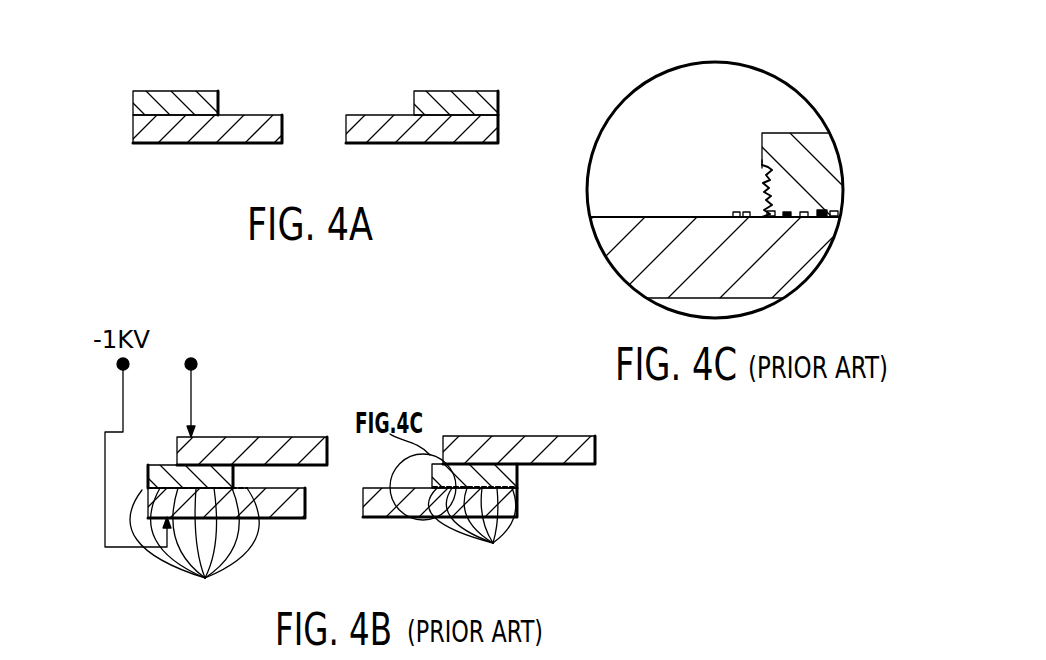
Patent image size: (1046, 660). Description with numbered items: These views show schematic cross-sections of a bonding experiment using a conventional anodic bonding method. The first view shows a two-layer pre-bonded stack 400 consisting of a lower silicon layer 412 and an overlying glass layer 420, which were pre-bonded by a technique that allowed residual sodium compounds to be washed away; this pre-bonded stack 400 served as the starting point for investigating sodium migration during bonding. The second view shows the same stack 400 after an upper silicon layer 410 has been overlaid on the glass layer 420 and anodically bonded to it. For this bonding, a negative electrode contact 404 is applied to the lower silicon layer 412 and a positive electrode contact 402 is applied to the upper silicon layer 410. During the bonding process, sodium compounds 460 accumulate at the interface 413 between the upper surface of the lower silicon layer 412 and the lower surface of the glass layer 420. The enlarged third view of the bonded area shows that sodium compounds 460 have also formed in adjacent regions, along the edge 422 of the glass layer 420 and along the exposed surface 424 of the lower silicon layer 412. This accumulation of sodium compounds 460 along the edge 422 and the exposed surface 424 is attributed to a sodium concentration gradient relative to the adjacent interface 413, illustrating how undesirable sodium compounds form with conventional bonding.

In FIG. 4A, the pre-bonded stack 400 is at (314, 78).
In FIG. 4B, the positive electrode contact 402 is at (194, 428).
In FIG. 4B, the negative electrode contact 404 is at (163, 522).
In FIG. 4B, the upper silicon layer 410 is at (450, 437).
In FIG. 4A, the lower silicon layer 412 is at (347, 143).
In FIG. 4B, the lower silicon layer 412 is at (363, 517).
In FIG. 4C, the lower silicon layer 412 is at (783, 268).
In FIG. 4B, the interface 413 is at (178, 474).
In FIG. 4C, the interface 413 is at (785, 216).
In FIG. 4A, the glass layer 420 is at (133, 96).
In FIG. 4B, the glass layer 420 is at (148, 475).
In FIG. 4C, the glass layer 420 is at (790, 143).
In FIG. 4C, the edge of glass layer 422 is at (762, 163).
In FIG. 4C, the exposed surface of lower silicon layer 424 is at (727, 214).
In FIG. 4B, the sodium compounds 460 is at (323, 550).
In FIG. 4C, the sodium compounds 460 is at (770, 197).